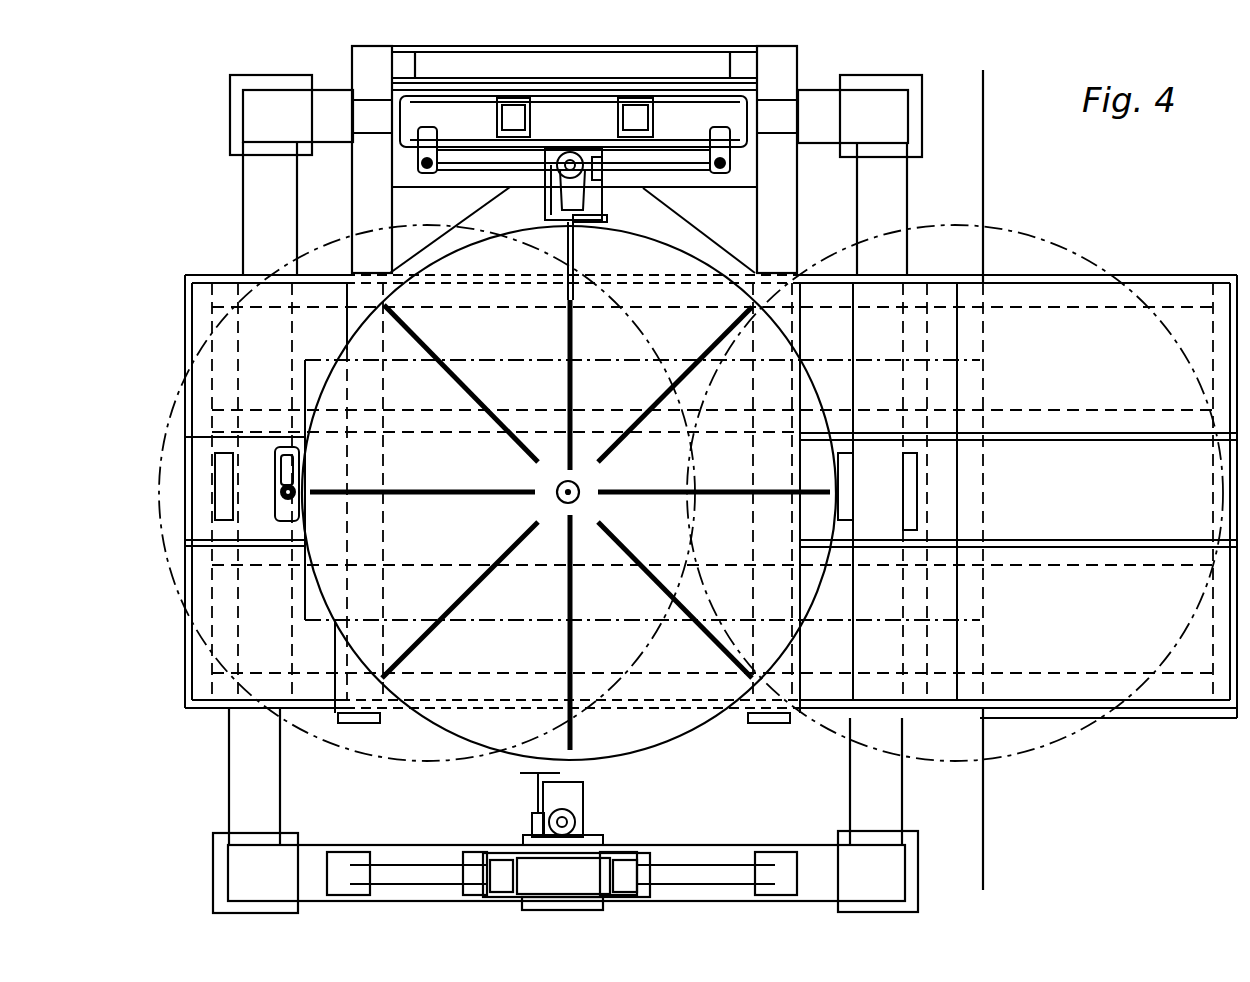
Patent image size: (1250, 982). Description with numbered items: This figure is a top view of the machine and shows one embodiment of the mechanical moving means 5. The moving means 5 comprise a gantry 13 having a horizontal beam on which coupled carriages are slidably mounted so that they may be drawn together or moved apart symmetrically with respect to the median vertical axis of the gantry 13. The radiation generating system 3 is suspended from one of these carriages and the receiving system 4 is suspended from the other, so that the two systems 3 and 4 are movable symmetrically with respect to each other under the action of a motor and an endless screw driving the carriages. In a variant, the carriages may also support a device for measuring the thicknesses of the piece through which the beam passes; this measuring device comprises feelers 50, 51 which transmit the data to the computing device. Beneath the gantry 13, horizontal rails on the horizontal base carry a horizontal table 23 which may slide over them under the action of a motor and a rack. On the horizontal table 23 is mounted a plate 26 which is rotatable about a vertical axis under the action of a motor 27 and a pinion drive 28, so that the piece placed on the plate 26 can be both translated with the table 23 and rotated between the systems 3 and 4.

The radiation generating system 3 is at (600, 206).
The receiving system 4 is at (586, 803).
The mechanical moving means 5 is at (1010, 194).
The gantry 13 is at (882, 866).
The horizontal table 23 is at (940, 332).
The plate 26 is at (685, 263).
The motor 27 is at (272, 457).
The pinion drive 28 is at (282, 495).
The feeler 50 is at (600, 224).
The feeler 51 is at (520, 773).